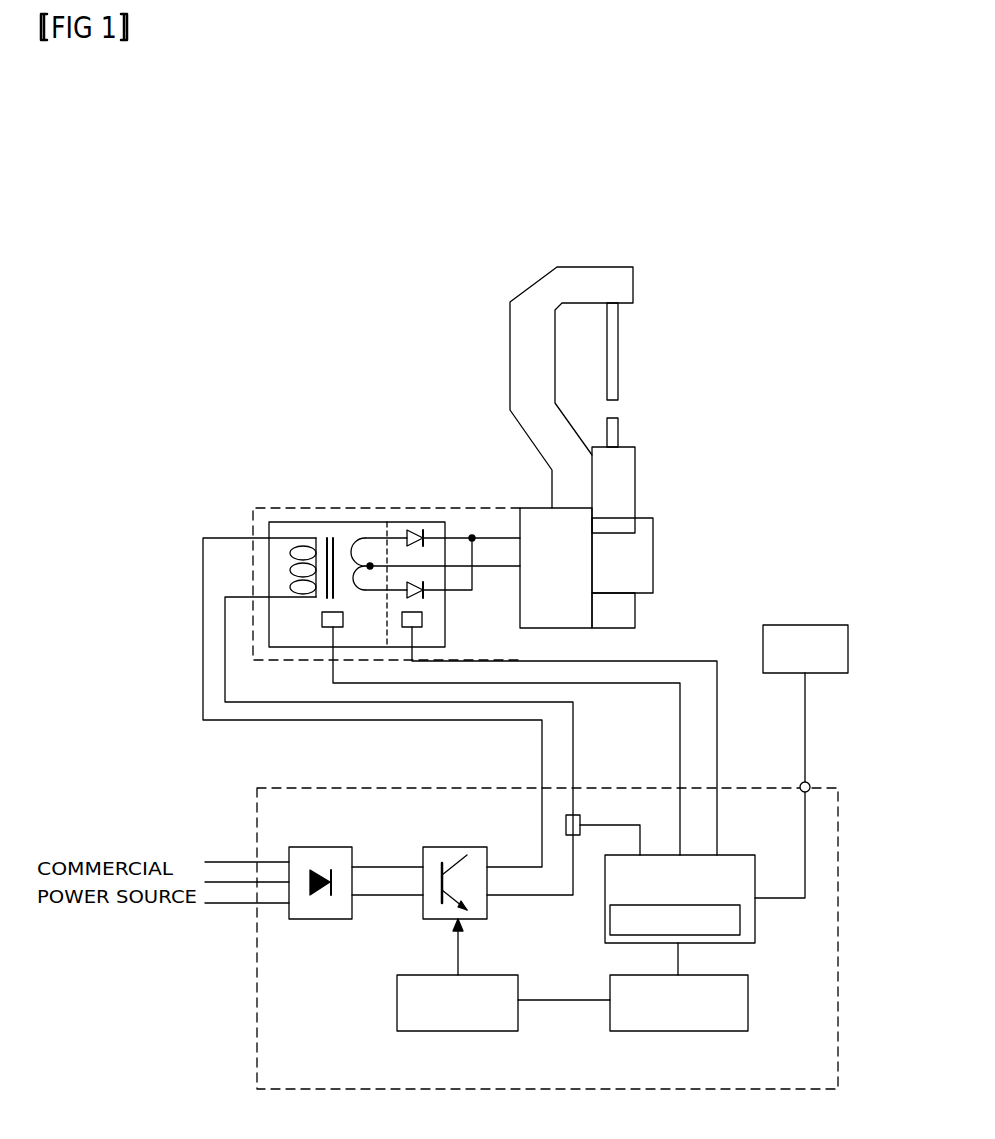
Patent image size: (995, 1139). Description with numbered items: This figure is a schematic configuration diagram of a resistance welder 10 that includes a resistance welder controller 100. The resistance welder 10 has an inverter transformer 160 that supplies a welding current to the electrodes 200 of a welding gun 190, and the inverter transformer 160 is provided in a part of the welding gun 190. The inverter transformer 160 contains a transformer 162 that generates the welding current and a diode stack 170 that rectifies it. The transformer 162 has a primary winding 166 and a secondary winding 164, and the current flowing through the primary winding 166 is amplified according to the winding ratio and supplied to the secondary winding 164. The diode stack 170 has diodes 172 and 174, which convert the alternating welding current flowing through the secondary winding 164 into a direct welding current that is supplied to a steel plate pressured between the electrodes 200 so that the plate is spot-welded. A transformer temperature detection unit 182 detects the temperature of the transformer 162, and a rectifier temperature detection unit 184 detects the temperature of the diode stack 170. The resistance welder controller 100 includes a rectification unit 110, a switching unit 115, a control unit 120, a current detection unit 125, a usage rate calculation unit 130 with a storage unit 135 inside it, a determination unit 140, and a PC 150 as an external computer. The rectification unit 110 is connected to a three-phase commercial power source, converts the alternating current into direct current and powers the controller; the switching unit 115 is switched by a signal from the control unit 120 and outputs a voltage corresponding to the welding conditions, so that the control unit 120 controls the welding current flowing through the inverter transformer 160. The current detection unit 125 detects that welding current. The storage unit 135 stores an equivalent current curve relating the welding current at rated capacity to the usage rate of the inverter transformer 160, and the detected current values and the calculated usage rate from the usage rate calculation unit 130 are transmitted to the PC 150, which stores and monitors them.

The resistance welder 10 is at (240, 264).
The resistance welder controller 100 is at (280, 774).
The rectification unit 110 is at (318, 920).
The switching unit 115 is at (458, 852).
The control unit 120 is at (496, 978).
The current detection unit 125 is at (576, 815).
The usage rate calculation unit 130 is at (727, 866).
The storage unit 135 is at (735, 905).
The determination unit 140 is at (750, 982).
The PC 150 is at (828, 635).
The inverter transformer 160 is at (497, 507).
The transformer 162 is at (318, 535).
The secondary winding 164 is at (350, 545).
The primary winding 166 is at (304, 548).
The diode stack 170 is at (402, 530).
The diode 172 is at (416, 538).
The diode 174 is at (428, 590).
The transformer temperature detection unit 182 is at (328, 628).
The rectifier temperature detection unit 184 is at (408, 630).
The welding gun 190 is at (588, 288).
The electrodes 200 is at (612, 433).